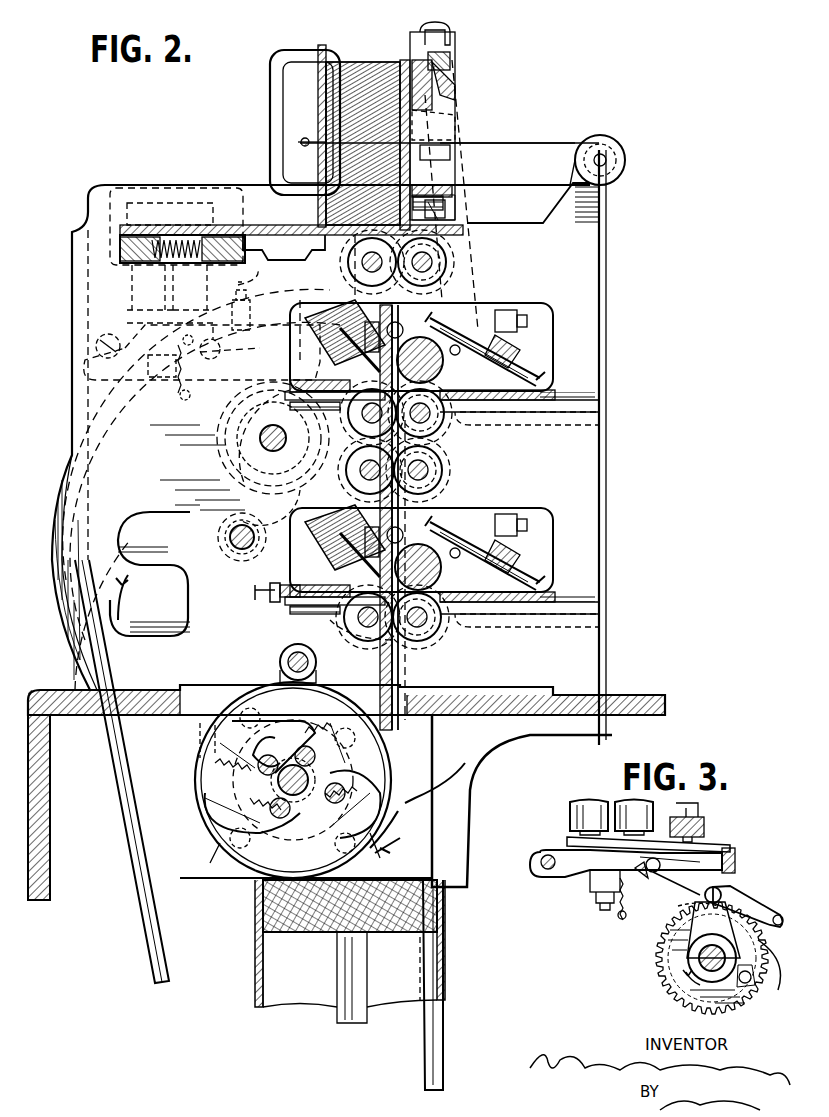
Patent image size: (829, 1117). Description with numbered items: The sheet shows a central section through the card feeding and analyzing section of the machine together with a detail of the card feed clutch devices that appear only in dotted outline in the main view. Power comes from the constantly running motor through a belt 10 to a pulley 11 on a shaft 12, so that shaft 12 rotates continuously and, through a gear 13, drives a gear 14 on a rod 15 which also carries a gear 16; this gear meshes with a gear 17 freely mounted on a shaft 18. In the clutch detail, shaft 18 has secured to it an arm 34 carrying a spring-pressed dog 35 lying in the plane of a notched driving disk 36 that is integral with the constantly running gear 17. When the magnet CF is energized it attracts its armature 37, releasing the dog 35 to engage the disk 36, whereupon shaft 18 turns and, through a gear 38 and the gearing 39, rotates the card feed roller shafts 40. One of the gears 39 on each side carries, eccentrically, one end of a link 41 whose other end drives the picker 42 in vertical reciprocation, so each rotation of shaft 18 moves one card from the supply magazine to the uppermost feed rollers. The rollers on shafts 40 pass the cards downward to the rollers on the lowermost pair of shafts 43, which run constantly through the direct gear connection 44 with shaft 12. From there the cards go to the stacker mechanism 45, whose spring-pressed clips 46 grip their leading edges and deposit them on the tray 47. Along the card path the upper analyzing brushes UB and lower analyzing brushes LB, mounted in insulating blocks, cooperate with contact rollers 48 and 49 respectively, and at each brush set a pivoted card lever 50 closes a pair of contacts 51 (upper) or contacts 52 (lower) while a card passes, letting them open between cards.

In FIG. 2, the belt 10 is at (140, 926).
In FIG. 2, the pulley 11 is at (62, 596).
In FIG. 2, the shaft 12 is at (232, 535).
In FIG. 2, the gear 13 is at (230, 544).
In FIG. 2, the gear 14 is at (260, 560).
In FIG. 2, the rod 15 is at (288, 581).
In FIG. 2, the gear 16 is at (268, 503).
In FIG. 2, the gear 17 is at (232, 474).
In FIG. 3, the gear 17 is at (735, 992).
In FIG. 2, the shaft 18 is at (262, 436).
In FIG. 3, the shaft 18 is at (699, 964).
In FIG. 3, the arm 34 is at (705, 931).
In FIG. 3, the spring-pressed dog 35 is at (750, 905).
In FIG. 3, the notched driving disk 36 is at (760, 968).
In FIG. 2, the armature 37 is at (140, 333).
In FIG. 3, the armature 37 is at (580, 852).
In FIG. 2, the gear 38 is at (220, 455).
In FIG. 3, the gear 38 is at (690, 912).
In FIG. 2, the gearing 39 is at (340, 273).
In FIG. 2, the card feed roller shafts 40 is at (422, 262).
In FIG. 2, the link 41 is at (444, 215).
In FIG. 2, the picker 42 is at (440, 68).
In FIG. 2, the lowermost pair of shafts 43 is at (410, 630).
In FIG. 2, the gear connection 44 is at (340, 628).
In FIG. 2, the stacker mechanism 45 is at (215, 813).
In FIG. 2, the spring-pressed clips 46 is at (470, 755).
In FIG. 2, the tray 47 is at (295, 934).
In FIG. 2, the contact roller 48 is at (443, 362).
In FIG. 2, the contact roller 49 is at (441, 572).
In FIG. 2, the card lever 50 is at (400, 328).
In FIG. 2, the contacts 51 is at (430, 325).
In FIG. 2, the contacts 52 is at (430, 530).
In FIG. 2, the card feed magnet CF is at (130, 296).
In FIG. 3, the card feed magnet CF is at (580, 814).
In FIG. 2, the upper analyzing brushes UB is at (335, 384).
In FIG. 2, the lower analyzing brushes LB is at (335, 585).